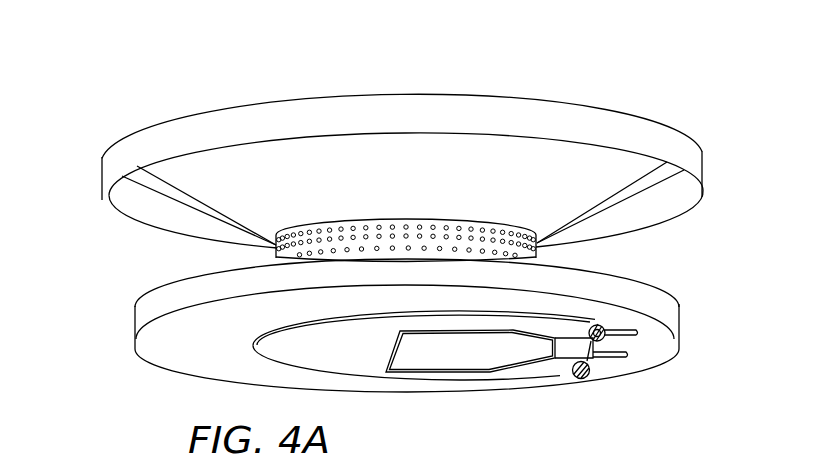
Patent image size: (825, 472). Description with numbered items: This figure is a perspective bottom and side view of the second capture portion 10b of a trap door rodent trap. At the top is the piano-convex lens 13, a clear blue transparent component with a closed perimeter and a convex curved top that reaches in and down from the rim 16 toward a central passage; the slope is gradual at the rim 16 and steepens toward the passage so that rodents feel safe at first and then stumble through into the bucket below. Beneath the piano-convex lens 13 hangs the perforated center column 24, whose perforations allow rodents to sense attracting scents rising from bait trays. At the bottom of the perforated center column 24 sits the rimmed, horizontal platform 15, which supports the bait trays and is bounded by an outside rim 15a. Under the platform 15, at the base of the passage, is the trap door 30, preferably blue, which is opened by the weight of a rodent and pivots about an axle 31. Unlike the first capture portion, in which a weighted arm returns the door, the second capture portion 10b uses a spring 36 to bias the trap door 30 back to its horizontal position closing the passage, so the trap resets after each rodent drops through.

The second capture portion 10b is at (716, 124).
The piano-convex lens 13 is at (521, 196).
The rim 16 is at (621, 142).
The perforated center column 24 is at (528, 260).
The rimmed, horizontal platform 15 is at (225, 344).
The outside rim 15a is at (664, 317).
The trap door 30 is at (335, 362).
The axle 31 is at (590, 363).
The spring 36 is at (533, 374).